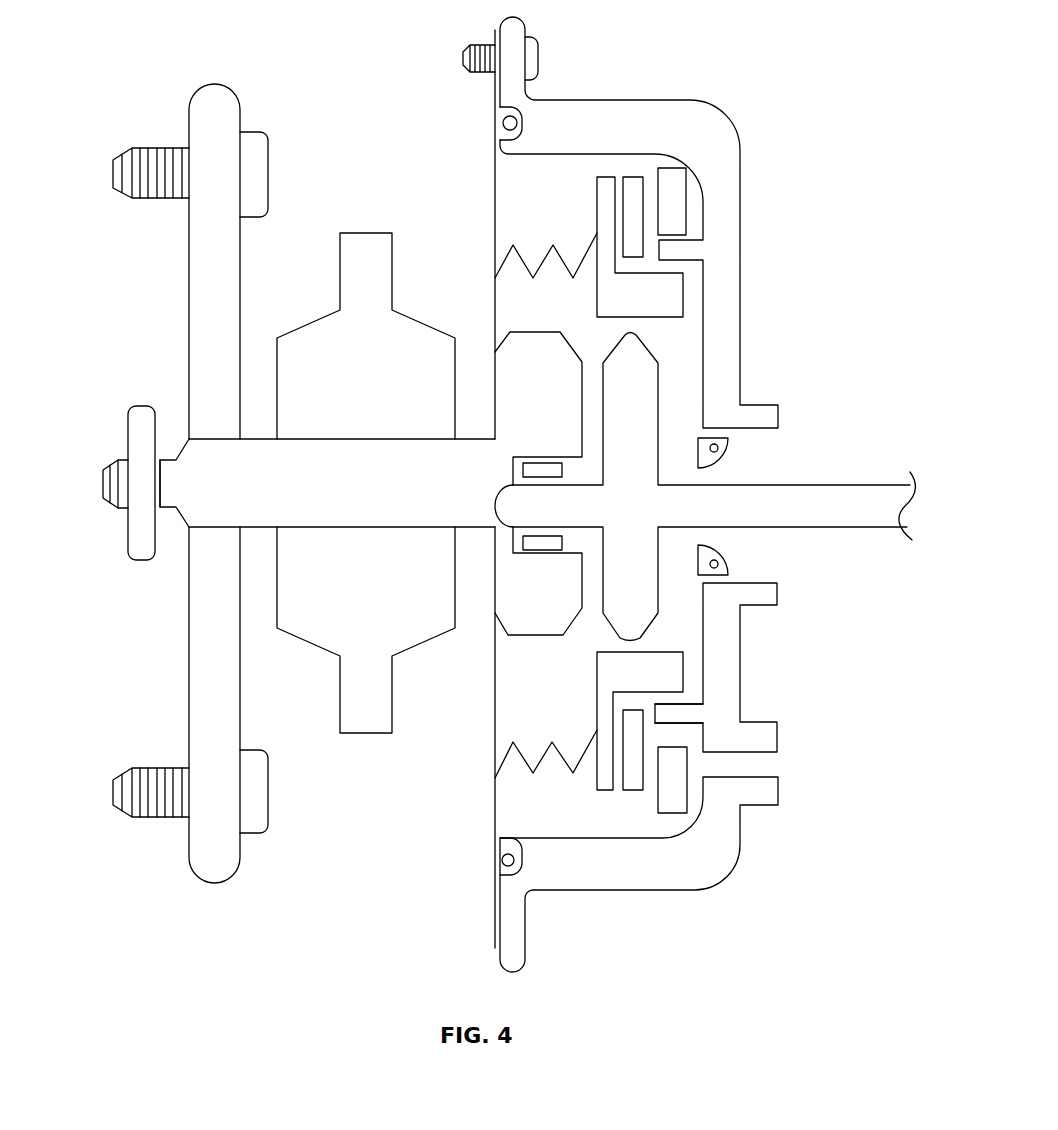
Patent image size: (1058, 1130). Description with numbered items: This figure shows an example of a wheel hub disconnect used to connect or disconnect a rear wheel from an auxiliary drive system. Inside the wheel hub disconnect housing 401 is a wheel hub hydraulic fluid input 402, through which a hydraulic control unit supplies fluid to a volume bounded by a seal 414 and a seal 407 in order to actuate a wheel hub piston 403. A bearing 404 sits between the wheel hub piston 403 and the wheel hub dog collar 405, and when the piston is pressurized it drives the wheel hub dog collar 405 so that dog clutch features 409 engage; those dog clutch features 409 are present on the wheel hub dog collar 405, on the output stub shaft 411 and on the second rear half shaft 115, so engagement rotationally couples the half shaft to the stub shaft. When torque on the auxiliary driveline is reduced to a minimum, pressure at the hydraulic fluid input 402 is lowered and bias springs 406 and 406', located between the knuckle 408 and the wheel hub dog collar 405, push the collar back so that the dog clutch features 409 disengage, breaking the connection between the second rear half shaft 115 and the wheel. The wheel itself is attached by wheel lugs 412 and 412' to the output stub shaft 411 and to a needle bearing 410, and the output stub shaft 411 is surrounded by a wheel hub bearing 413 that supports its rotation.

The second rear half shaft 115 is at (839, 493).
The wheel hub disconnect housing 401 is at (728, 118).
The wheel hub hydraulic fluid input 402 is at (770, 763).
The wheel hub piston 403 is at (672, 208).
The bearing 404 is at (633, 790).
The wheel hub dog collar 405 is at (597, 703).
The bias spring 406 is at (546, 232).
The bias spring 406' is at (506, 770).
The seal 407 is at (503, 123).
The knuckle 408 is at (493, 695).
The dog clutch features 409 is at (610, 623).
The needle bearing 410 is at (522, 470).
The output stub shaft 411 is at (97, 487).
The wheel lug 412 is at (168, 184).
The wheel lug 412' is at (168, 803).
The wheel hub bearing 413 is at (365, 232).
The seal 414 is at (727, 447).